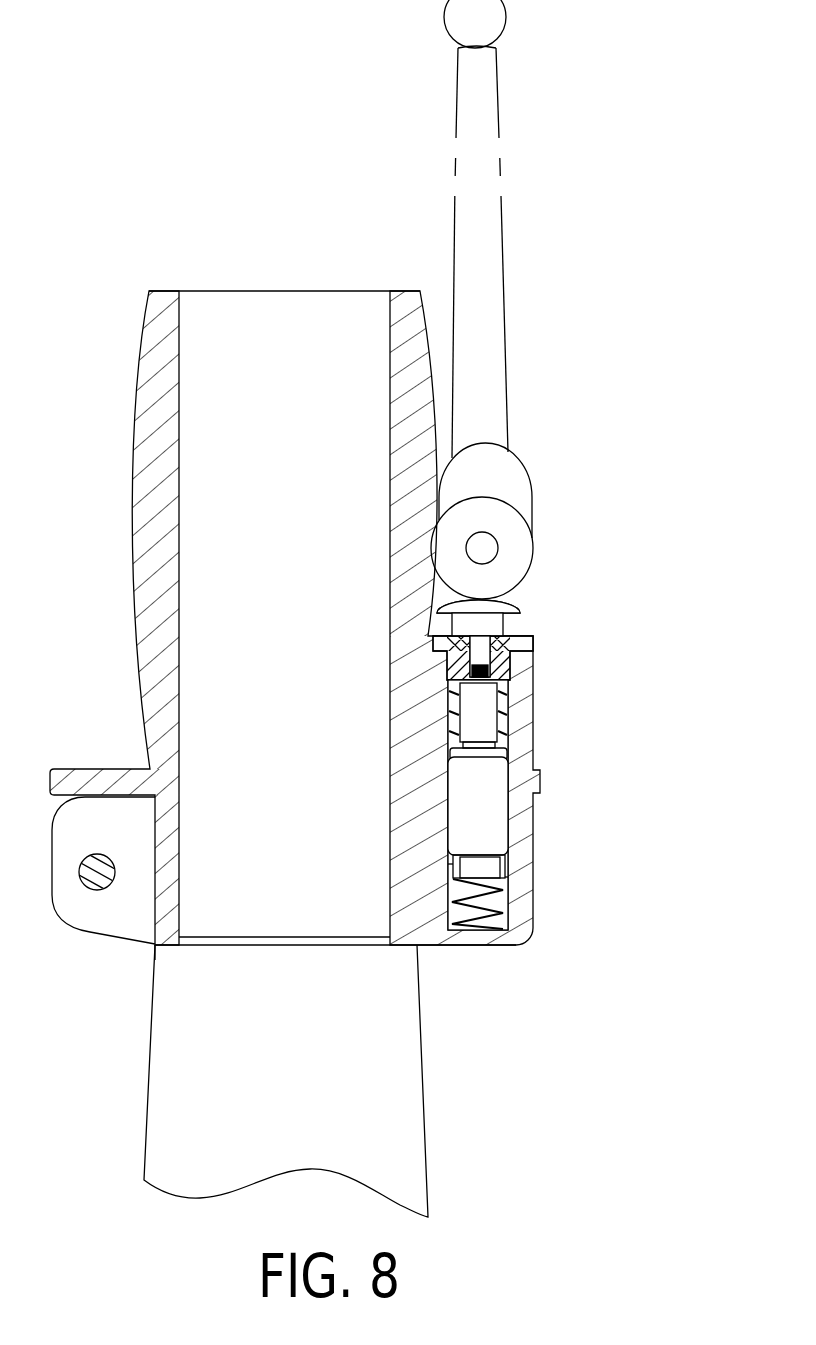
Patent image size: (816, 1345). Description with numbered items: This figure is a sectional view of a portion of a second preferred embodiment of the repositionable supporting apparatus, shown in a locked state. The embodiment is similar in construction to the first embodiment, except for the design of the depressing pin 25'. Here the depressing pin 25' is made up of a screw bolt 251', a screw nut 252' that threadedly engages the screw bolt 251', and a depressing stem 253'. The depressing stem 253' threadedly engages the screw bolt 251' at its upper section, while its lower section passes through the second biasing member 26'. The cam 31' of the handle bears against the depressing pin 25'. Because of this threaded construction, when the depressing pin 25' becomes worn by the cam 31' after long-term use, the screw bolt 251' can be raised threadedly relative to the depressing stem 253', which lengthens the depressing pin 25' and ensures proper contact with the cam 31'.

The cam 31' is at (564, 299).
The depressing pin 25' is at (570, 759).
The screw bolt 251' is at (542, 634).
The screw nut 252' is at (533, 659).
The depressing stem 253' is at (546, 798).
The second biasing member 26' is at (542, 810).